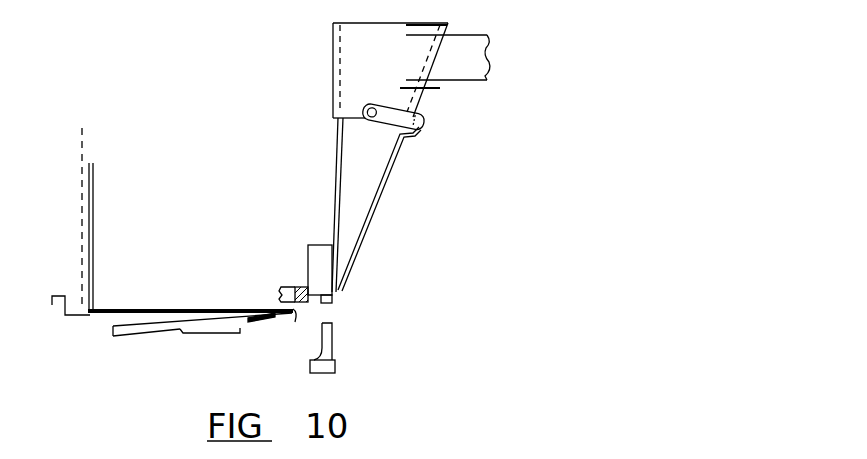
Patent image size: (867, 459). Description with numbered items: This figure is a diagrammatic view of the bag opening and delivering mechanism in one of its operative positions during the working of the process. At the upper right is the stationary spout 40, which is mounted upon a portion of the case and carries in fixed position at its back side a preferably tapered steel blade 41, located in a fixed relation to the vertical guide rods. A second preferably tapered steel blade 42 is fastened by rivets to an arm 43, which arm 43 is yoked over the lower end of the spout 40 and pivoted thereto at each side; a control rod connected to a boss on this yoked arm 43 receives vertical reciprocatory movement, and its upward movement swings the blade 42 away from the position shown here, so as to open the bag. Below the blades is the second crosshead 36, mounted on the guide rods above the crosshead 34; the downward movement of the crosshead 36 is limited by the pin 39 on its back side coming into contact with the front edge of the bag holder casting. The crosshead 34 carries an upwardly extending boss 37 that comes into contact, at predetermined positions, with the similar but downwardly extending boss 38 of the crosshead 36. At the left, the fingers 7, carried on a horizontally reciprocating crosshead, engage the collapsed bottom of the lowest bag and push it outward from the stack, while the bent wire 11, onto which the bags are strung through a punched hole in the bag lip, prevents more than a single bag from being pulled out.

The stationary spout 40 is at (411, 70).
The arm 43 is at (407, 105).
The second steel blade 42 is at (424, 129).
The steel blade 41 is at (340, 184).
The second crosshead 36 is at (316, 254).
The pin 39 is at (303, 287).
The downwardly extending boss 38 is at (334, 300).
The upwardly extending boss 37 is at (330, 346).
The crosshead 34 is at (337, 366).
The bent wire 11 is at (94, 257).
The fingers 7 is at (146, 330).